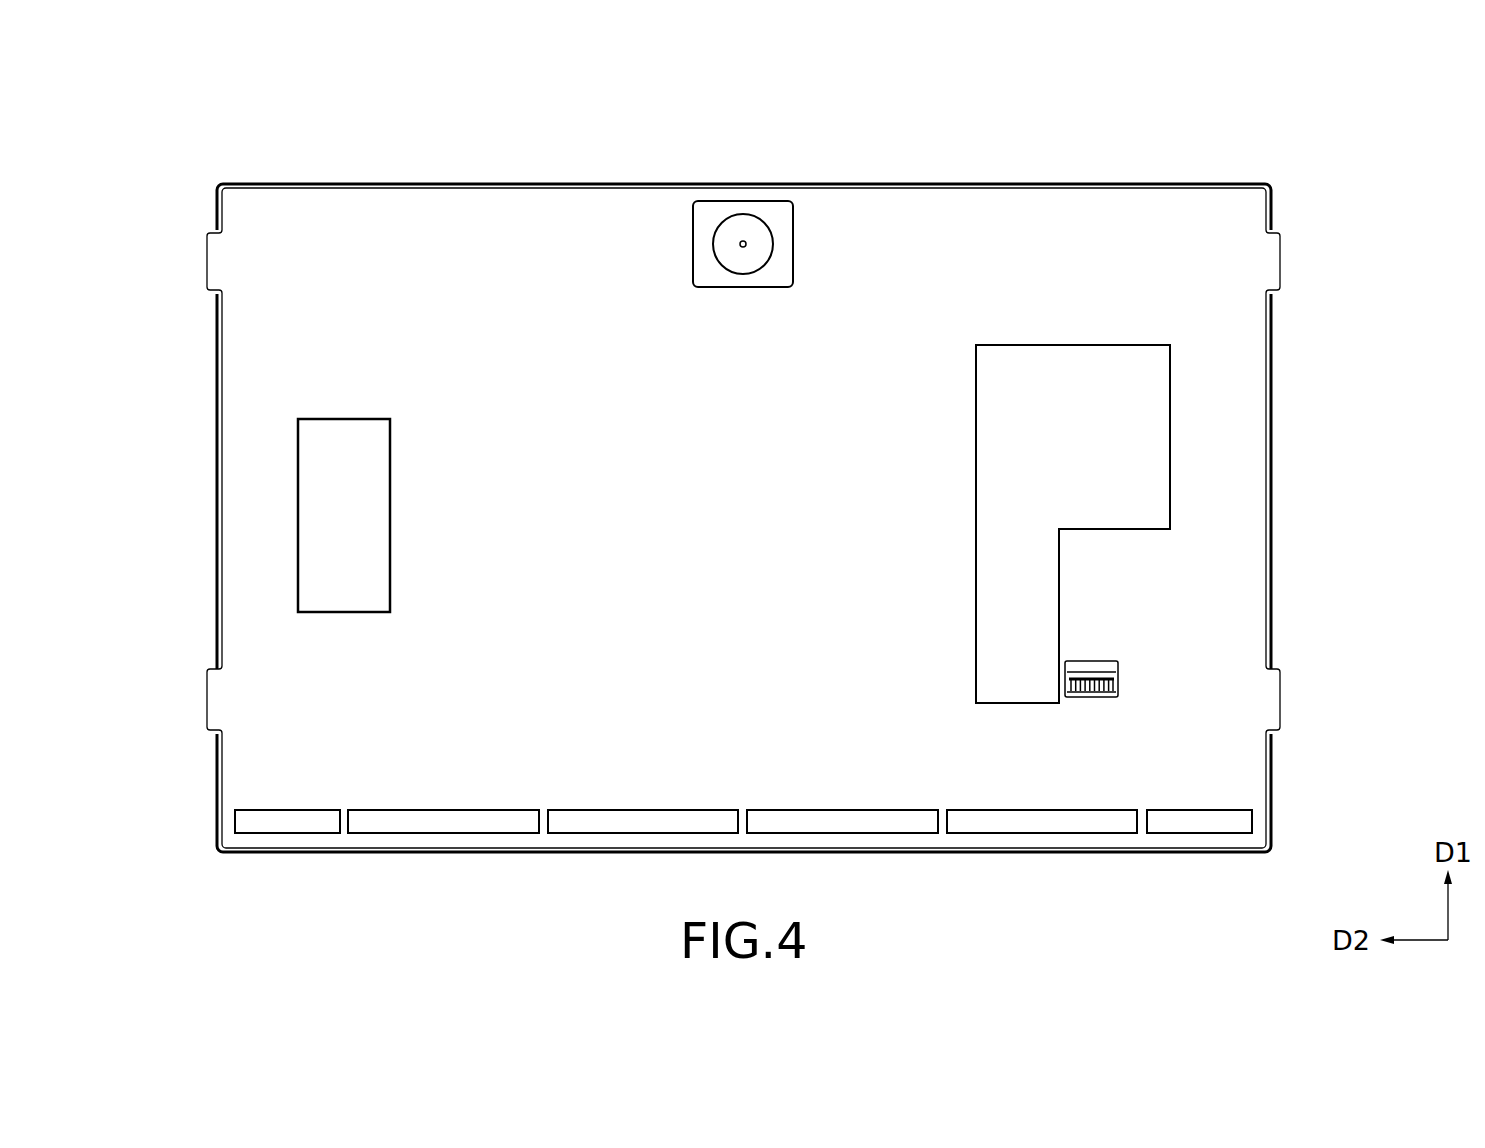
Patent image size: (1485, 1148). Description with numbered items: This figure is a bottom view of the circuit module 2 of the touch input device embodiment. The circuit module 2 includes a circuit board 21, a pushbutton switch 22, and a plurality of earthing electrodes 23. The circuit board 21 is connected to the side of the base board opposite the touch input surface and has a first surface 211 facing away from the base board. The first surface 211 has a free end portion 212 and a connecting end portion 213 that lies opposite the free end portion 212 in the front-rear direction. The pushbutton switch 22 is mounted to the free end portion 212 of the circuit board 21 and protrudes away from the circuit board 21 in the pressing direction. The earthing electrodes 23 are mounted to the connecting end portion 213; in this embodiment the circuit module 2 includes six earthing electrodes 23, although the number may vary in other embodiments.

The circuit module 2 is at (347, 158).
The circuit board 21 is at (437, 182).
The first surface 211 is at (252, 470).
The free end portion 212 is at (246, 215).
The connecting end portion 213 is at (228, 776).
The pushbutton switch 22 is at (734, 228).
The earthing electrode 23 is at (293, 825).